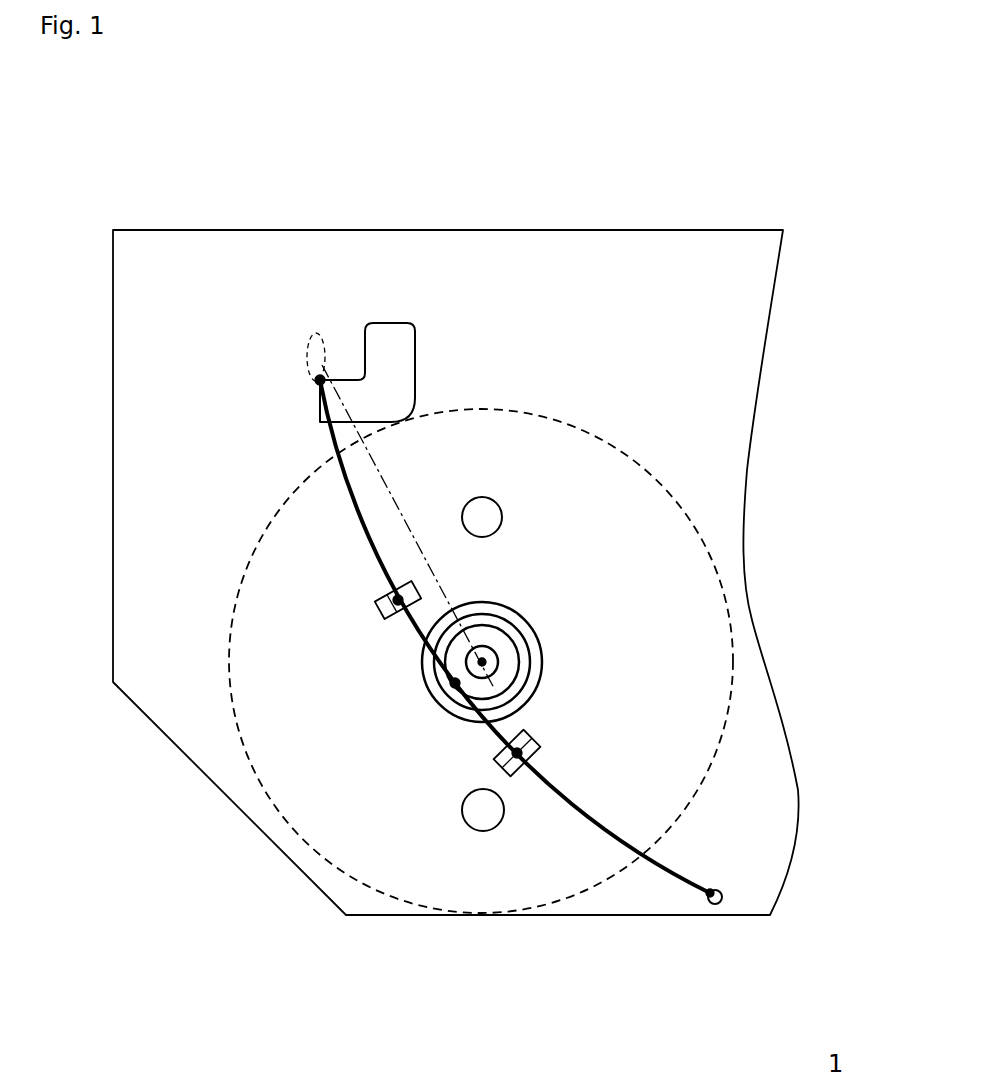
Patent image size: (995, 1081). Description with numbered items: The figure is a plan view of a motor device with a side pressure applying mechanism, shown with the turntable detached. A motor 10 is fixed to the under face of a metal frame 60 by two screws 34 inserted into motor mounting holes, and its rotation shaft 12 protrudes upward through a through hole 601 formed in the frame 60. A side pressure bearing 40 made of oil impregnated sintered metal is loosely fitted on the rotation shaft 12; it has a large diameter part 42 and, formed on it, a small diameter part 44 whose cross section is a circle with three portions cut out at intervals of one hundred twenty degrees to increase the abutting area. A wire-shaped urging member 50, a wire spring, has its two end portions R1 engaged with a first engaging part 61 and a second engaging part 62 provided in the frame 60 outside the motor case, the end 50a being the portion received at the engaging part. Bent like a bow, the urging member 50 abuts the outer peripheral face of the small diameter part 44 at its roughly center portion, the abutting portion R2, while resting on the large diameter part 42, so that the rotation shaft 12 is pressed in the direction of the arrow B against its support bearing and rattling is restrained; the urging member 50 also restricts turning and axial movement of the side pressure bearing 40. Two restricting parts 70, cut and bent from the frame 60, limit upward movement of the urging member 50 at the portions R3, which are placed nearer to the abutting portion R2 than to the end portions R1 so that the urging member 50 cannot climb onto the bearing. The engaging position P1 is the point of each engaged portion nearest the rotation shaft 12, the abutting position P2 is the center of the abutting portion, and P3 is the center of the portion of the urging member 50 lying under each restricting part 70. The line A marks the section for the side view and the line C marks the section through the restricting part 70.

The frame 60 is at (635, 228).
The second engaging part 62 is at (415, 367).
The motor 10 is at (488, 408).
The rotation shaft 12 is at (700, 533).
The screw 34 is at (488, 496).
The through hole 601 is at (482, 650).
The side pressure bearing 40 is at (828, 643).
The large diameter part 42 is at (540, 672).
The small diameter part 44 is at (542, 648).
The urging member 50 is at (662, 868).
The wire end 50a is at (322, 352).
The first engaging part 61 is at (713, 905).
The restricting part 70 is at (380, 592).
The A-A line A is at (307, 317).
The arrow B is at (482, 662).
The C-C line C is at (518, 716).
The engaging position P1 is at (318, 381).
The abutting position P2 is at (450, 683).
The restricting part position P3 is at (388, 618).
The end portions R1 is at (318, 381).
The abutting portion R2 is at (450, 680).
The restricted portions R3 is at (372, 612).